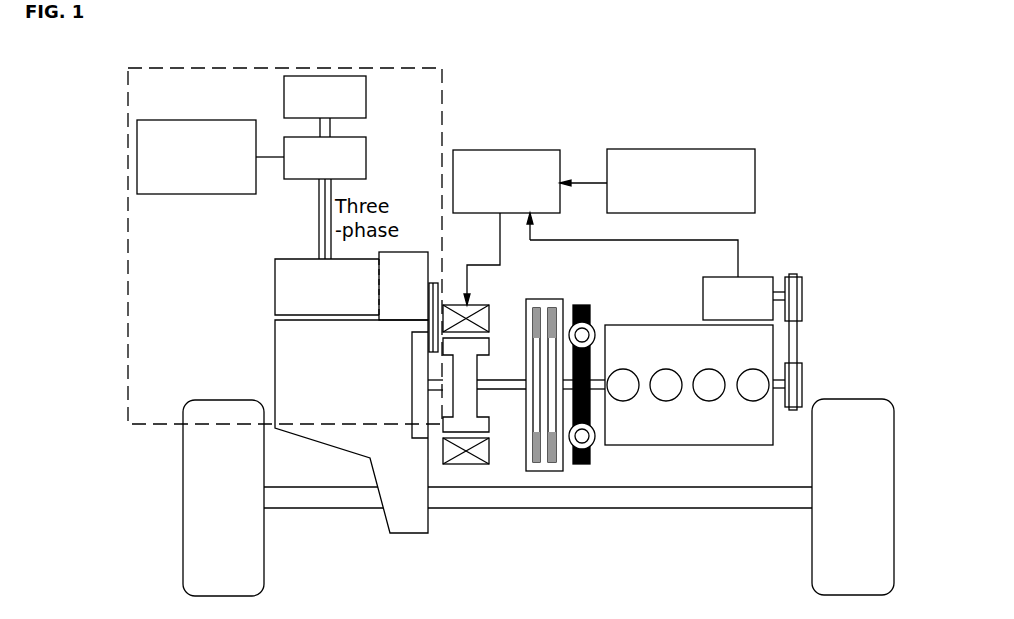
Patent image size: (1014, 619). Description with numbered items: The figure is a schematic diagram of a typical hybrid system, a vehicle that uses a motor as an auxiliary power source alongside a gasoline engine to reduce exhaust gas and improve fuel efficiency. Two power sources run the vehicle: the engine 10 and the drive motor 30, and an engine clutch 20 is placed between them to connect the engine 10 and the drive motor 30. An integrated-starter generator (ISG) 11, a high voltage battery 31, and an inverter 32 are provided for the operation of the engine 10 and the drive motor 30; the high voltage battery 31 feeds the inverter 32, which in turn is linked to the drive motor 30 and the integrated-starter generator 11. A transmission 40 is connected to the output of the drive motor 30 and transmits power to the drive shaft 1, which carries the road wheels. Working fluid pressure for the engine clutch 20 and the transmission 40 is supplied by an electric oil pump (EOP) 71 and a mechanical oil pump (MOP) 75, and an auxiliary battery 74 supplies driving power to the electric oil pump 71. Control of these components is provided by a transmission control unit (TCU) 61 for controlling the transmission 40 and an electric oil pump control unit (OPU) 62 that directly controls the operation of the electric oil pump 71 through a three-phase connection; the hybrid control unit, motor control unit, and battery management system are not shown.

The drive shaft 1 is at (621, 508).
The engine 10 is at (687, 445).
The integrated-starter generator (ISG) 11 is at (760, 277).
The engine clutch 20 is at (545, 471).
The drive motor 30 is at (465, 464).
The high voltage battery 31 is at (668, 149).
The inverter 32 is at (542, 150).
The transmission 40 is at (275, 373).
The transmission control unit (TCU) 61 is at (366, 95).
The electric oil pump control unit (OPU) 62 is at (366, 145).
The electric oil pump (EOP) 71 is at (275, 292).
The auxiliary battery 74 is at (137, 152).
The mechanical oil pump (MOP) 75 is at (421, 440).